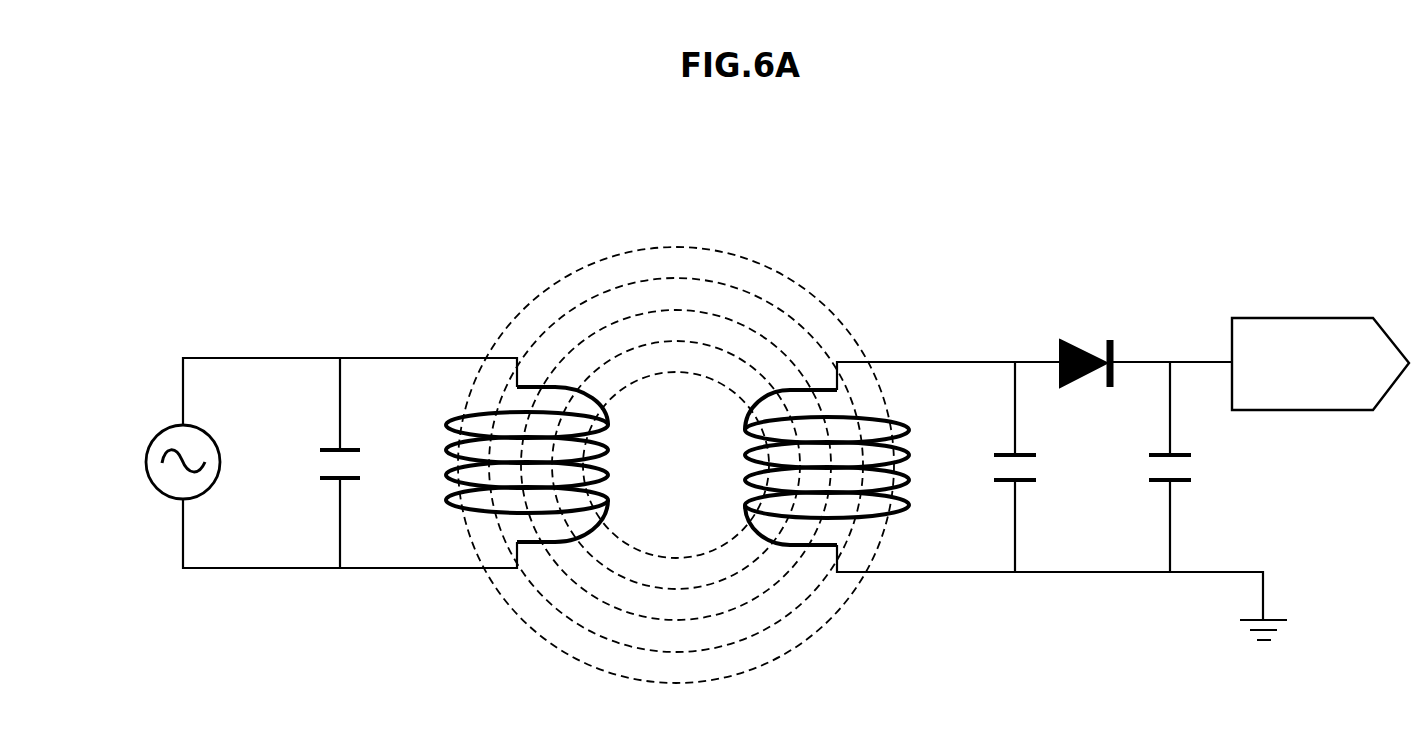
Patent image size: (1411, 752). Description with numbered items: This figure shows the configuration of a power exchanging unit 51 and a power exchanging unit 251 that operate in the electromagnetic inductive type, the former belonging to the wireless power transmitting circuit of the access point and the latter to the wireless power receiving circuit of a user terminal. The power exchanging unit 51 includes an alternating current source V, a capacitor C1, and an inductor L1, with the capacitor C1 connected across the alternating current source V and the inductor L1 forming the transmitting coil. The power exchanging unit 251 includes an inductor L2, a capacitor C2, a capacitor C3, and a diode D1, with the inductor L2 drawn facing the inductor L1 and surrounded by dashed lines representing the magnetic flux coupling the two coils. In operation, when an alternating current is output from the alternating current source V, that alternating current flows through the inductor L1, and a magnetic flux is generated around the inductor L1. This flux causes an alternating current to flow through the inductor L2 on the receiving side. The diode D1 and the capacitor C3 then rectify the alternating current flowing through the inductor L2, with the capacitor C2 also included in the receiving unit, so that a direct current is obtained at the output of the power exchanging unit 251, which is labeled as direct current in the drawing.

The power exchanging unit 51 is at (310, 210).
The power exchanging unit 251 is at (1170, 215).
The alternating current source V is at (146, 462).
The capacitor C1 is at (322, 447).
The inductor L1 is at (450, 424).
The inductor L2 is at (898, 418).
The diode D1 is at (1080, 345).
The capacitor C2 is at (1026, 453).
The capacitor C3 is at (1182, 453).